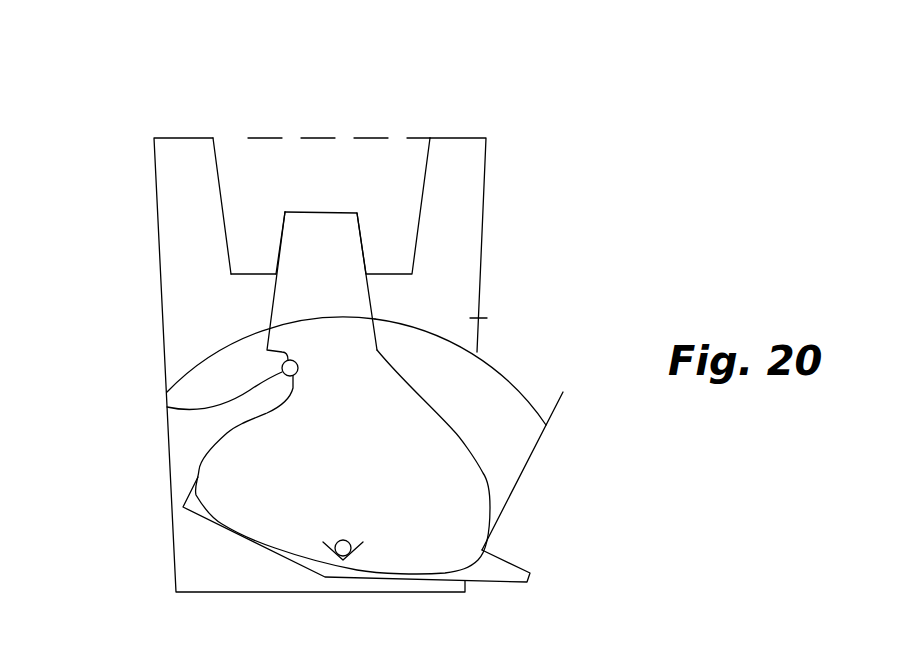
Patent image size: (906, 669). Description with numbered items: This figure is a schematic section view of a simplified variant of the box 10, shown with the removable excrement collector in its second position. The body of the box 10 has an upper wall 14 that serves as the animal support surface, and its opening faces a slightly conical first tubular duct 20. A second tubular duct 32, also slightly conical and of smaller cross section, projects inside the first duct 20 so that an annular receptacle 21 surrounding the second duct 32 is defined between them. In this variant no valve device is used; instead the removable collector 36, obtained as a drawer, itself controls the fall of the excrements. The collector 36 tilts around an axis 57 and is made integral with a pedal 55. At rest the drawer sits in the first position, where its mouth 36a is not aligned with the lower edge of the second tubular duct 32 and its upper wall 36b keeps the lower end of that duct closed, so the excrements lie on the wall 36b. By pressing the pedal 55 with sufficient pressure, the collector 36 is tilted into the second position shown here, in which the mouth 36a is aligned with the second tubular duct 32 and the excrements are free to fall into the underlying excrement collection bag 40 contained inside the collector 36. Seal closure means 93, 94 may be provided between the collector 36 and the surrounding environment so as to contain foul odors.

The box 10 is at (527, 129).
The upper wall 14 is at (437, 138).
The first tubular duct 20 is at (217, 174).
The annular receptacle 21 is at (245, 250).
The second tubular duct 32 is at (282, 240).
The removable collector 36 is at (553, 410).
The upper mouth 36a is at (334, 340).
The upper wall 36b is at (528, 352).
The excrement collection bag 40 is at (187, 437).
The pedal 55 is at (512, 563).
The axis 57 is at (338, 541).
The seal closure means 93 is at (175, 410).
The seal closure means 94 is at (208, 355).